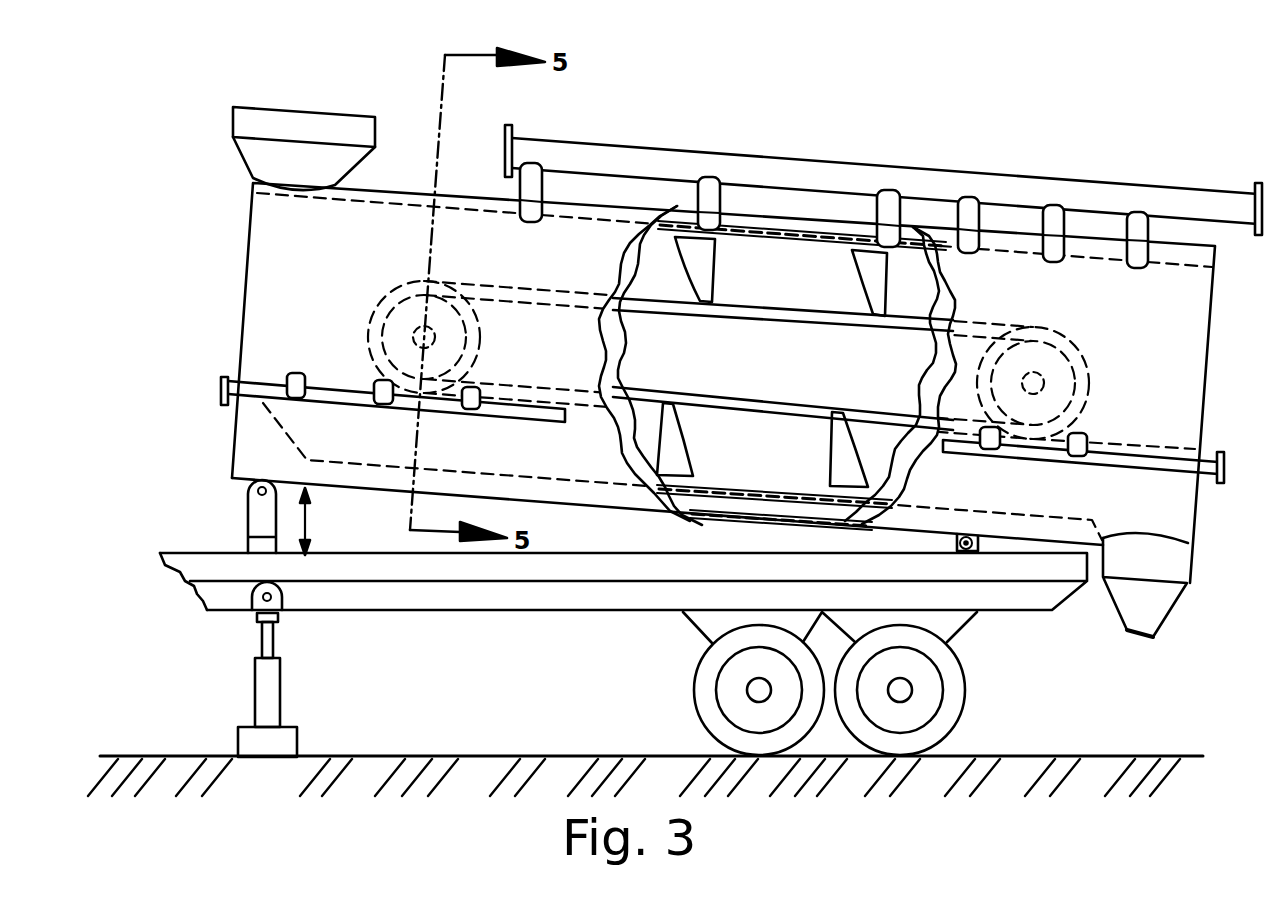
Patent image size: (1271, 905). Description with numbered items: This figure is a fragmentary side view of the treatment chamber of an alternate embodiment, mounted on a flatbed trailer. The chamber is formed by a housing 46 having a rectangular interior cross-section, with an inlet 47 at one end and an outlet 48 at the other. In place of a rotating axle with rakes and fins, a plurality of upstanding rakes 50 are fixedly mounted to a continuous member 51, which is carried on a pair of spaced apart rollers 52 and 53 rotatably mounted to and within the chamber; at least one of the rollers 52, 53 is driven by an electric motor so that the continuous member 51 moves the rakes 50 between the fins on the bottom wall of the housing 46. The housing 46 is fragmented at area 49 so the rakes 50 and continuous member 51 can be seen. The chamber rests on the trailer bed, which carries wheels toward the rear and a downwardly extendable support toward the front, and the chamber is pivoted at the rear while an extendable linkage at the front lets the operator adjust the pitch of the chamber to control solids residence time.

The housing 46 is at (458, 188).
The inlet 47 is at (255, 107).
The outlet 48 is at (1125, 630).
The fragmented area 49 is at (620, 266).
The upstanding rakes 50 is at (873, 292).
The continuous member 51 is at (765, 318).
The roller 52 is at (413, 333).
The roller 53 is at (1033, 378).